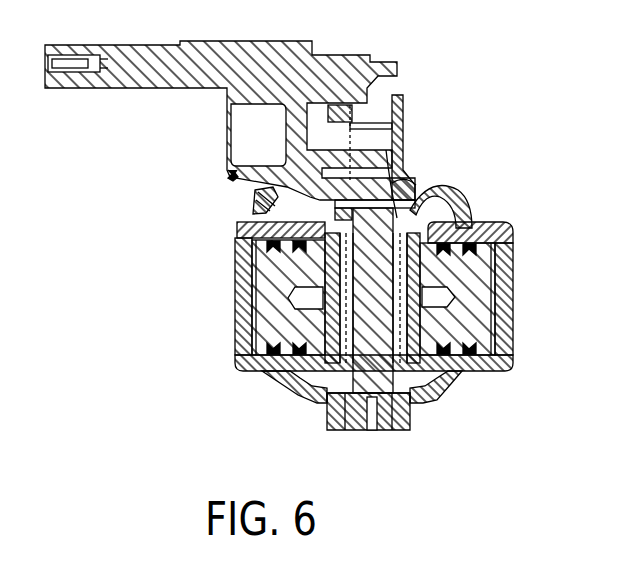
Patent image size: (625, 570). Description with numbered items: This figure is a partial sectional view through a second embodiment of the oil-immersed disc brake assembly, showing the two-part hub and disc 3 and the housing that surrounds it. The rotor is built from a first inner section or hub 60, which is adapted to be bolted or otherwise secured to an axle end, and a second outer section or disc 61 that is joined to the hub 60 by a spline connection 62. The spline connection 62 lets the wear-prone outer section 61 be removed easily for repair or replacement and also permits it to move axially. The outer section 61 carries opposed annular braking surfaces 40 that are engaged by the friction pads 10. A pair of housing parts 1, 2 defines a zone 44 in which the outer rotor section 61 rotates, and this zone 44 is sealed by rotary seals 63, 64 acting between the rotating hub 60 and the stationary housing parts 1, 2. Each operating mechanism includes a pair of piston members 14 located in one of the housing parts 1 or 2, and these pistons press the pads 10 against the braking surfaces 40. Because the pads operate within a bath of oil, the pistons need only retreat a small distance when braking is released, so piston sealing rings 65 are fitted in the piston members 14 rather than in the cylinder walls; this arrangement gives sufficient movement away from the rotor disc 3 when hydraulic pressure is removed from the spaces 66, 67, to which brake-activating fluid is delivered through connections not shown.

The housing part 1 is at (240, 338).
The housing part 2 is at (437, 403).
The hub and disc 3 is at (205, 137).
The friction pads 10 is at (328, 403).
The piston members 14 is at (238, 360).
The annular braking surfaces 40 is at (358, 365).
The zone 44 is at (455, 203).
The inner section or hub 60 is at (226, 177).
The outer section (disc) 61 is at (420, 188).
The spline connection 62 is at (400, 130).
The rotary seal 63 is at (405, 100).
The rotary seal 64 is at (250, 213).
The piston sealing rings 65 is at (270, 372).
The space 66 is at (258, 298).
The space 67 is at (498, 296).